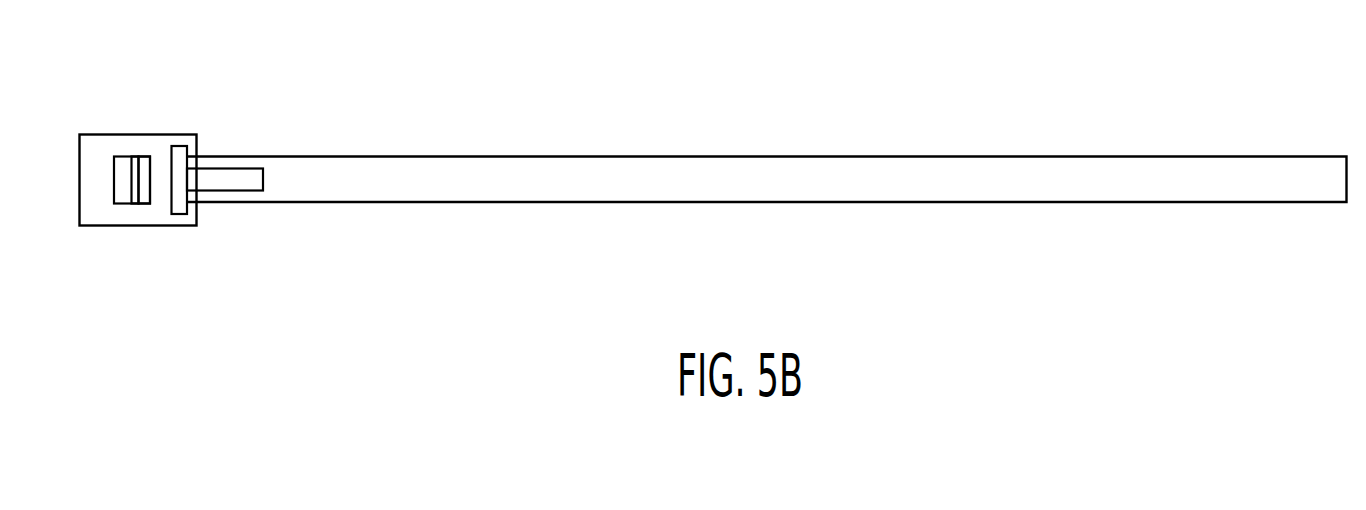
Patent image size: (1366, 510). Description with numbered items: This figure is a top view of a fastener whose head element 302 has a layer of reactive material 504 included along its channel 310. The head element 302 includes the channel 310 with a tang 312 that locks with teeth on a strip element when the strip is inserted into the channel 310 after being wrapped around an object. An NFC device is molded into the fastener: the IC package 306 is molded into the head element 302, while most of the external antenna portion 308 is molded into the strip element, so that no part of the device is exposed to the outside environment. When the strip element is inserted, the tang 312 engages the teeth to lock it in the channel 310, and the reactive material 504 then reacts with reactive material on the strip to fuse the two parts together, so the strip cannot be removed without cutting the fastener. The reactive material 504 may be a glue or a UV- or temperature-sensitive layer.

The head element 302 is at (103, 134).
The IC package 306 is at (188, 150).
The external antenna portion 308 is at (263, 181).
The channel 310 is at (122, 197).
The tang 312 is at (143, 160).
The layer of reactive material 504 is at (134, 200).